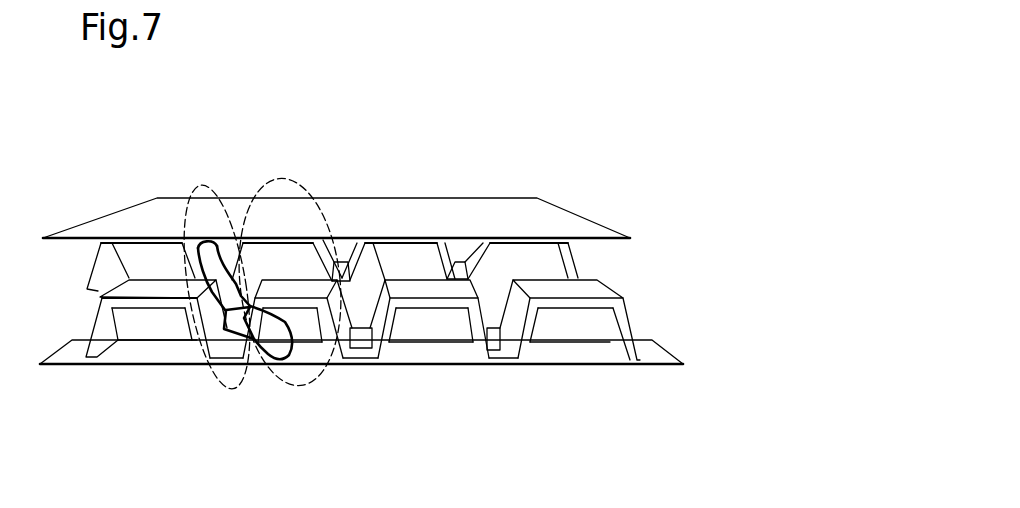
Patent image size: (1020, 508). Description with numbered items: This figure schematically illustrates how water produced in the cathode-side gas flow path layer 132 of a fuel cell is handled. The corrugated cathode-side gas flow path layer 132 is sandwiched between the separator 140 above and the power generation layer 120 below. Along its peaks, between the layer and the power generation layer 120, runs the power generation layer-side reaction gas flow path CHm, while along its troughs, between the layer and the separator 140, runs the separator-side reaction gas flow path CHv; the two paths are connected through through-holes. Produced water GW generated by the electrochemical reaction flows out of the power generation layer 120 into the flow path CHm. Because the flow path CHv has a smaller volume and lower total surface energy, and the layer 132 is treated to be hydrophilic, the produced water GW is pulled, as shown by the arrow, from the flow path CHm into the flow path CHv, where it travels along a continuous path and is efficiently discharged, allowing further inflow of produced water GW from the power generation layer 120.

The separator 140 is at (640, 205).
The power generation layer 120 is at (670, 385).
The cathode-side gas flow path layer 132 is at (640, 298).
The produced water GW is at (282, 394).
The separator-side reaction gas flow path CHv is at (212, 184).
The power generation layer-side reaction gas flow path CHm is at (303, 190).